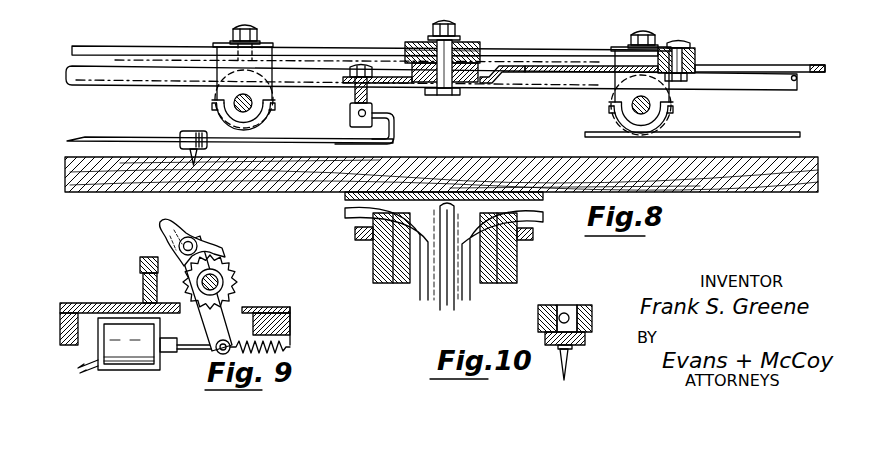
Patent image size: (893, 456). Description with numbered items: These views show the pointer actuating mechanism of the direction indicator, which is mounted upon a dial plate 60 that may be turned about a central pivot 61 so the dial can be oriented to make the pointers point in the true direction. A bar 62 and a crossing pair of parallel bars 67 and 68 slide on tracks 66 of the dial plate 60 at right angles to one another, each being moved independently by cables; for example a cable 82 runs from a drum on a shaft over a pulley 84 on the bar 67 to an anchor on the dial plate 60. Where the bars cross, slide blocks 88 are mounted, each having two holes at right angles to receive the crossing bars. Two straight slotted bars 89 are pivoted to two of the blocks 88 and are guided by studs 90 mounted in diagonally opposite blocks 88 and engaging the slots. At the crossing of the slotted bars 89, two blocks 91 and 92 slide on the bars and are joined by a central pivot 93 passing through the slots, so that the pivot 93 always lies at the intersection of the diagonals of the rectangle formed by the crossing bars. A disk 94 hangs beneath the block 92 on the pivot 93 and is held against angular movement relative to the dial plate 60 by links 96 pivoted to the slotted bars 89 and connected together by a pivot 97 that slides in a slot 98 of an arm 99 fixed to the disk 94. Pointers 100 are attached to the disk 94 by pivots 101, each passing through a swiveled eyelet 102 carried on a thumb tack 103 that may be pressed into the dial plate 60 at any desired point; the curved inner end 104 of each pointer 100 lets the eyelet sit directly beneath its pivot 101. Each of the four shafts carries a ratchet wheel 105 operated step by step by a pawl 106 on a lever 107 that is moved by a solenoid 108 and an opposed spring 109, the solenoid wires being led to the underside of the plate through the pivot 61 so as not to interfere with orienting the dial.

In FIG. 8, the dial plate 60 is at (749, 190).
In FIG. 8, the central pivot 61 is at (484, 285).
In FIG. 8, the bar 62 is at (744, 87).
In FIG. 9, the track 66 is at (139, 266).
In FIG. 8, the bar 67 is at (651, 108).
In FIG. 8, the bar 68 is at (232, 106).
In FIG. 8, the cable 82 is at (775, 132).
In FIG. 8, the pulley 84 is at (624, 122).
In FIG. 8, the slide block 88 is at (262, 107).
In FIG. 8, the slotted bar 89 is at (326, 47).
In FIG. 8, the stud 90 is at (241, 27).
In FIG. 8, the block 91 is at (460, 41).
In FIG. 8, the block 92 is at (494, 69).
In FIG. 8, the central pivot 93 is at (458, 91).
In FIG. 8, the disk 94 is at (393, 86).
In FIG. 8, the link 96 is at (605, 50).
In FIG. 8, the pivot 97 is at (684, 42).
In FIG. 8, the slot 98 is at (584, 75).
In FIG. 8, the arm 99 is at (795, 63).
In FIG. 8, the pointer 100 is at (113, 137).
In FIG. 8, the pivot 101 is at (350, 98).
In FIG. 8, the swiveled eyelet 102 is at (188, 131).
In FIG. 10, the swiveled eyelet 102 is at (586, 305).
In FIG. 8, the thumb tack 103 is at (195, 163).
In FIG. 10, the thumb tack 103 is at (574, 358).
In FIG. 8, the curved inner end 104 is at (394, 134).
In FIG. 9, the ratchet wheel 105 is at (239, 262).
In FIG. 9, the pawl 106 is at (207, 238).
In FIG. 9, the lever 107 is at (240, 306).
In FIG. 9, the solenoid 108 is at (146, 368).
In FIG. 9, the spring 109 is at (284, 353).